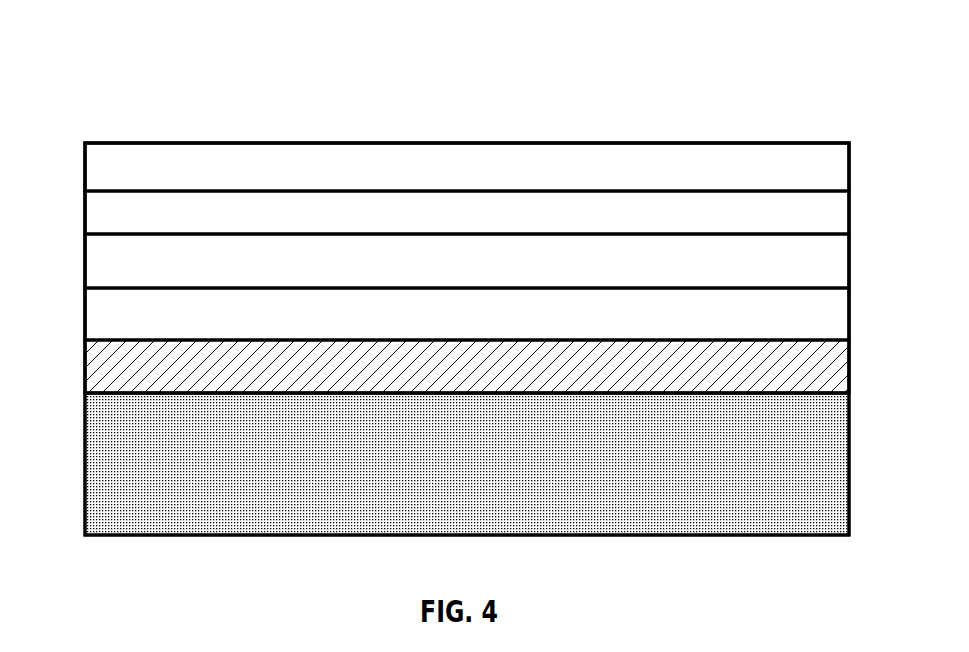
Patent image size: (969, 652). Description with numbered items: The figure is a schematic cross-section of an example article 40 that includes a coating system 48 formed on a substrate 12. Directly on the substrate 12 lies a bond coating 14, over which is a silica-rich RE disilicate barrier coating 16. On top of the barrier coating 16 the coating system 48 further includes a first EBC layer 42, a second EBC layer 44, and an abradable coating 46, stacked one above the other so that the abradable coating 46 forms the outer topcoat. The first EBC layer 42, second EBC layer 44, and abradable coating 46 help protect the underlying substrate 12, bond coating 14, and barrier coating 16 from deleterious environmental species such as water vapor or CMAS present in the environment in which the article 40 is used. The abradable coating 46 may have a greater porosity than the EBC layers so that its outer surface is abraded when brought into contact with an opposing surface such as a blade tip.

The article 40 is at (832, 72).
The substrate 12 is at (85, 445).
The bond coating 14 is at (85, 360).
The silica-rich RE disilicate barrier coating 16 is at (85, 308).
The first EBC layer 42 is at (85, 257).
The second EBC layer 44 is at (85, 204).
The abradable coating 46 is at (85, 155).
The coating system 48 is at (866, 143).